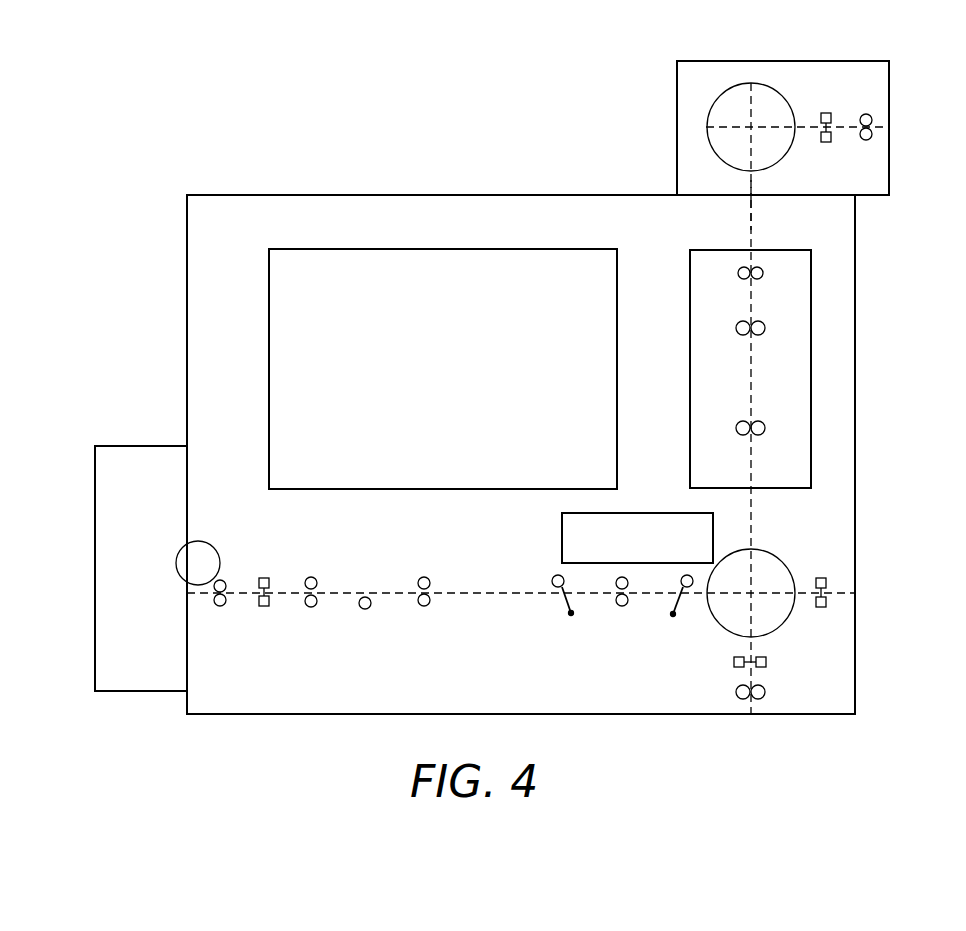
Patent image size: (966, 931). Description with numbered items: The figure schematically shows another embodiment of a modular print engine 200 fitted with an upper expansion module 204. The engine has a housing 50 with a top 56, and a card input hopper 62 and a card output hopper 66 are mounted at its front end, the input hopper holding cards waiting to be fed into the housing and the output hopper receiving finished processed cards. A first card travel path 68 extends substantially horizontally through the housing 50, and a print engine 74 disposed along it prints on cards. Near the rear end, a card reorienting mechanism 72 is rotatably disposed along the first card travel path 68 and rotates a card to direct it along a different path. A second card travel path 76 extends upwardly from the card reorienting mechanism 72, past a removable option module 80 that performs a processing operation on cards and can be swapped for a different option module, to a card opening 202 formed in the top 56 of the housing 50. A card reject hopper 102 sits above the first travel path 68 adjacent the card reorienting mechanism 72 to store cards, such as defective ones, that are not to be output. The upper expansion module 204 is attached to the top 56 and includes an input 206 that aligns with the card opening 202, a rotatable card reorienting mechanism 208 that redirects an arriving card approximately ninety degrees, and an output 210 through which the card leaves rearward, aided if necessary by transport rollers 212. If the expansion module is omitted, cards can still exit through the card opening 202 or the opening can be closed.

The housing 50 is at (266, 186).
The modular print engine 200 is at (369, 148).
The top 56 is at (471, 194).
The card input hopper 62 is at (141, 458).
The card output hopper 66 is at (95, 637).
The print engine 74 is at (618, 372).
The removable option module 80 is at (690, 297).
The second card travel path 76 is at (753, 374).
The card reject hopper 102 is at (562, 538).
The first card travel path 68 is at (438, 589).
The card reorienting mechanism 72 is at (765, 551).
The upper expansion module 204 is at (667, 68).
The rotatable card reorienting mechanism 208 is at (776, 95).
The output 210 is at (889, 129).
The transport rollers 212 is at (866, 141).
The input 206 is at (752, 195).
The card opening 202 is at (746, 198).